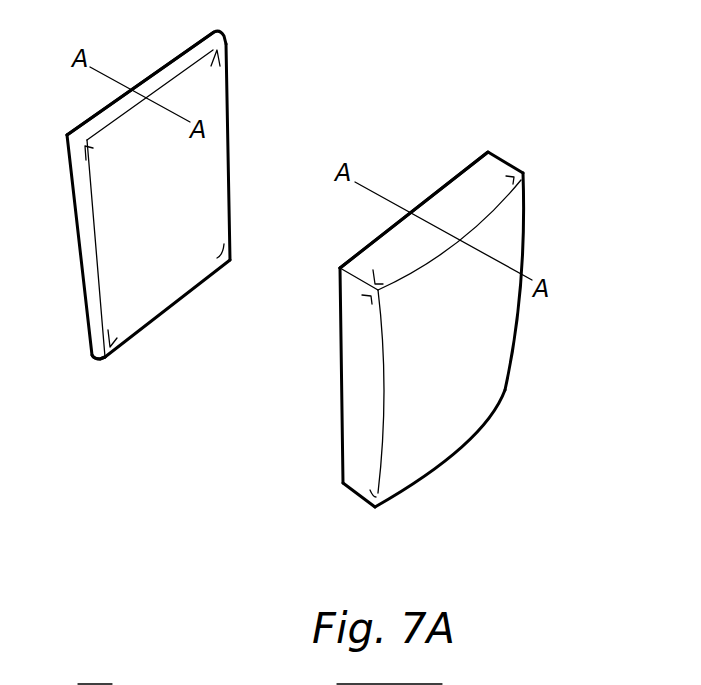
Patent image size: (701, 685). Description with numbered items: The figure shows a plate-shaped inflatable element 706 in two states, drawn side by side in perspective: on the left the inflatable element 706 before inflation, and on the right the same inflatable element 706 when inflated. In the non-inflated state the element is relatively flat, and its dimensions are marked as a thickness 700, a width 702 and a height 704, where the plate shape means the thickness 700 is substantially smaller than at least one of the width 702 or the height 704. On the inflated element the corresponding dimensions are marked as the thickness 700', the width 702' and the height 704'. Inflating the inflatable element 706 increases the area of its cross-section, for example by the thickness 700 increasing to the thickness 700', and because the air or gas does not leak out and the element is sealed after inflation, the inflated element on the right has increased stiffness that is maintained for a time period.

The thickness 700 is at (72, 389).
The width 702 is at (140, 77).
The height 704 is at (61, 247).
The inflatable element 706 is at (217, 95).
The thickness 700' is at (321, 520).
The width 702' is at (410, 204).
The height 704' is at (305, 375).